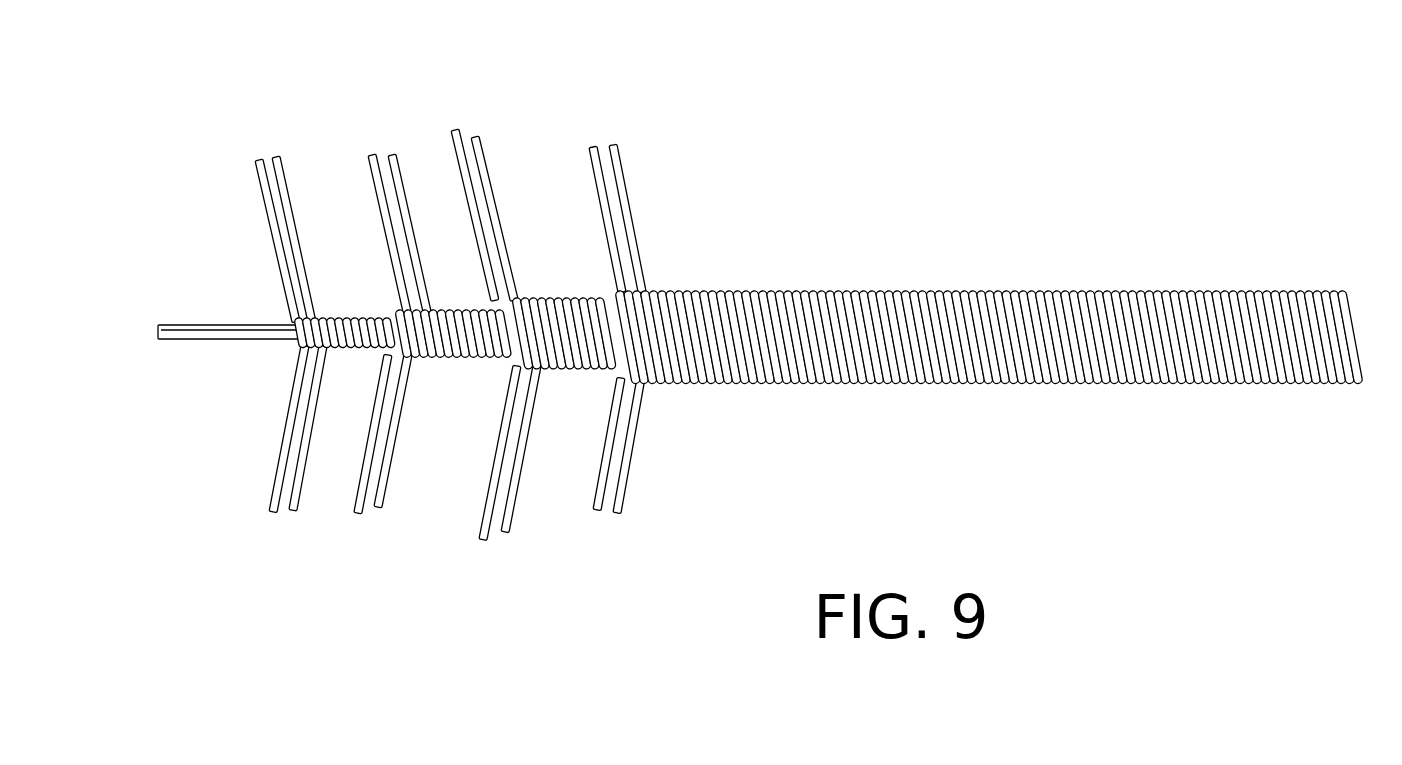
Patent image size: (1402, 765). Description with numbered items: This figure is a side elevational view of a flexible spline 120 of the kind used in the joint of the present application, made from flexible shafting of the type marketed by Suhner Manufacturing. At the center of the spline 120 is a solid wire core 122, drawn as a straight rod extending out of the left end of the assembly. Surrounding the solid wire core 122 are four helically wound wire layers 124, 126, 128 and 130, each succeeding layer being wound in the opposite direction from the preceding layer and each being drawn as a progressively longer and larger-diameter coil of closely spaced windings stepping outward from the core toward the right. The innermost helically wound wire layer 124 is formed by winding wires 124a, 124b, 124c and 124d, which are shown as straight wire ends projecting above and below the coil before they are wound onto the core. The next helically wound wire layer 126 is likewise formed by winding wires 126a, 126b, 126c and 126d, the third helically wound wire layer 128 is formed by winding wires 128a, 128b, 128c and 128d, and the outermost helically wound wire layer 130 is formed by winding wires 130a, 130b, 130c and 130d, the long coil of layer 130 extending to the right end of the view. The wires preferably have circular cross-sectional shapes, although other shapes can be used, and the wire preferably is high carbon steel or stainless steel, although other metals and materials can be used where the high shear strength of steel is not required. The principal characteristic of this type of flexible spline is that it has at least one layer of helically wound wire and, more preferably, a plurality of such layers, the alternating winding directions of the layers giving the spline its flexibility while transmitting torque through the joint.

The spline 120 is at (737, 335).
The solid wire core 122 is at (195, 325).
The helically wound wire layer 124 is at (285, 335).
The wire 124a is at (270, 224).
The wire 124b is at (278, 156).
The wire 124c is at (292, 507).
The wire 124d is at (277, 493).
The helically wound wire layer 126 is at (396, 334).
The wire 126a is at (368, 175).
The wire 126b is at (390, 152).
The wire 126c is at (377, 508).
The wire 126d is at (357, 513).
The helically wound wire layer 128 is at (511, 335).
The wire 128a is at (455, 130).
The wire 128b is at (478, 137).
The wire 128c is at (505, 532).
The wire 128d is at (482, 542).
The helically wound wire layer 130 is at (961, 329).
The wire 130a is at (590, 147).
The wire 130b is at (620, 150).
The wire 130c is at (623, 502).
The wire 130d is at (598, 513).